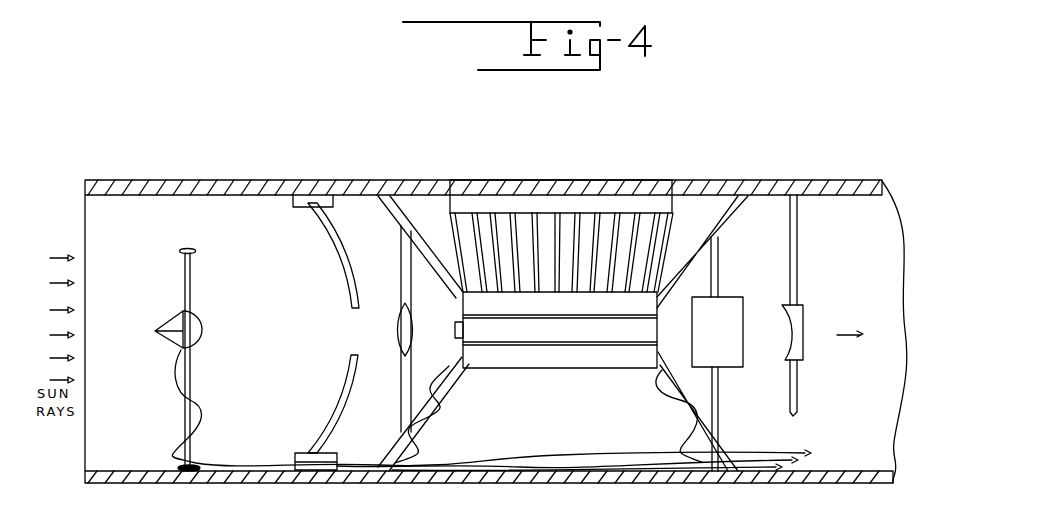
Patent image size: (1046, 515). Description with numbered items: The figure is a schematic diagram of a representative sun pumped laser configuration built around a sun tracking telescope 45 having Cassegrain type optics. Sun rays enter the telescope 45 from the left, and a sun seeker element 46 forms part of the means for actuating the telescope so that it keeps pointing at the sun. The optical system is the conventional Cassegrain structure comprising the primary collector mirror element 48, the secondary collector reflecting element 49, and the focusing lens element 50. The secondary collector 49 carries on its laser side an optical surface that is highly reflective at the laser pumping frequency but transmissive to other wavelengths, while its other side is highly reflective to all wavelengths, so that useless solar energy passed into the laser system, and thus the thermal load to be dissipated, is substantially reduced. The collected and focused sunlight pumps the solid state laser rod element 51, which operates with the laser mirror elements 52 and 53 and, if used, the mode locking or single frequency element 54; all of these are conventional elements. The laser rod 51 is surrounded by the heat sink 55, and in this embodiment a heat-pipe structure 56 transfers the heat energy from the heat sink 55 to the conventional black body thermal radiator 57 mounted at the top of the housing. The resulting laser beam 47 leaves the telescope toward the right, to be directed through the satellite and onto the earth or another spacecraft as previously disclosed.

The sun tracking telescope 45 is at (276, 180).
The sun seeker element 46 is at (170, 348).
The laser beam 47 is at (840, 335).
The primary collector mirror element 48 is at (333, 248).
The secondary collector reflecting element 49 is at (205, 333).
The focusing lens element 50 is at (397, 340).
The solid state laser rod element 51 is at (633, 340).
The laser mirror element 52 is at (456, 330).
The laser mirror element 53 is at (803, 356).
The mode locking or single frequency element 54 is at (735, 367).
The heat sink 55 is at (530, 368).
The heat-pipe structure 56 is at (666, 240).
The black body thermal radiator 57 is at (683, 172).